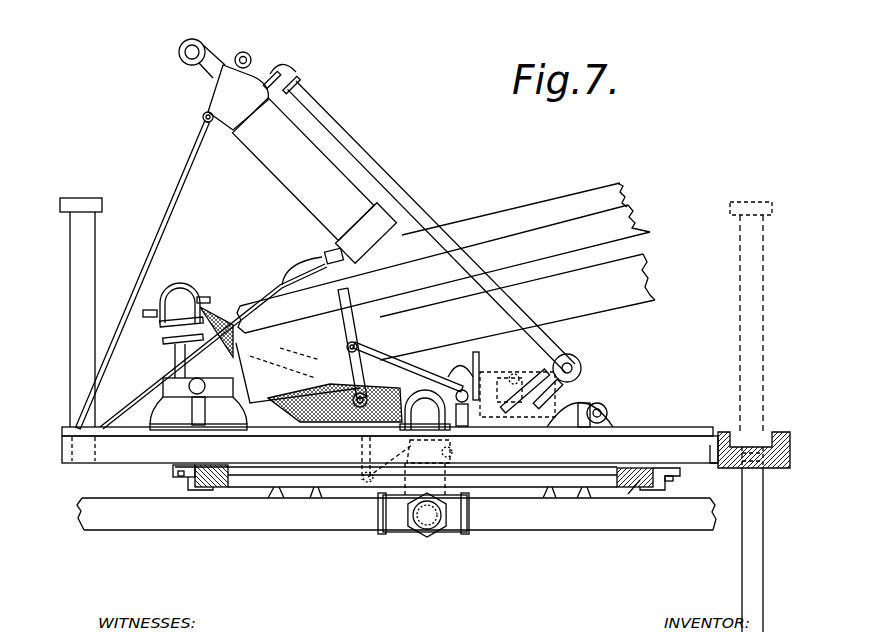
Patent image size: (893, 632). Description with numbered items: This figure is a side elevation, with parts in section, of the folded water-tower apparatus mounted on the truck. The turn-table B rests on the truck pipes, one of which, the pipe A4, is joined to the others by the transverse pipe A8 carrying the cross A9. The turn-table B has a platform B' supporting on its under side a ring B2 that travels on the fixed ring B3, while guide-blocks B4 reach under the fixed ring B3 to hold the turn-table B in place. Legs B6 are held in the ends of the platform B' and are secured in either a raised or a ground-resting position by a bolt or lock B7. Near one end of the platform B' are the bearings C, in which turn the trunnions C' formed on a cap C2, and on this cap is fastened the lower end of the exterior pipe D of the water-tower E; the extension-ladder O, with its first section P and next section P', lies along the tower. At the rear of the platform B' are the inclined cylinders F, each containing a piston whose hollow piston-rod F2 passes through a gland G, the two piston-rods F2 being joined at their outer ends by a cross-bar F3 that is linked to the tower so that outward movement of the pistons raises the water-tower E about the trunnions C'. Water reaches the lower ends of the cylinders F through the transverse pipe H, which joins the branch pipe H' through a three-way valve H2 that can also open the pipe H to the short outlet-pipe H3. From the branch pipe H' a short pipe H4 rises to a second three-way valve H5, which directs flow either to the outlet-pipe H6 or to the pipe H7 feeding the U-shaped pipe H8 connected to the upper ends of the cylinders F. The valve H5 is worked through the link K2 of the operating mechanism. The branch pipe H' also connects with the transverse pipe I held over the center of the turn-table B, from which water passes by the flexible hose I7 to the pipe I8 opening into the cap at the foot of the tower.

The turn-table B is at (390, 417).
The platform B' is at (428, 444).
The ring B2 is at (620, 466).
The fixed ring B3 is at (632, 490).
The guide-blocks B4 is at (686, 486).
The legs B6 is at (776, 528).
The bolt or lock B7 is at (778, 454).
The transverse pipe A8 is at (396, 508).
The pipe A4 is at (428, 523).
The cross A9 is at (400, 523).
The ladder-section P' is at (511, 205).
The extension-ladder O is at (630, 188).
The ladder-section P is at (444, 264).
The water-tower E is at (646, 266).
The exterior pipe D is at (574, 289).
The cylinders F is at (248, 263).
The hollow piston-rod F2 is at (232, 62).
The cross-bar F3 is at (192, 50).
The gland G is at (205, 93).
The U-shaped pipe H8 is at (392, 176).
The pipe H7 is at (562, 362).
The three-way valve H5 is at (566, 392).
The transversely-extending pipe H is at (592, 401).
The short pipe H4 is at (501, 374).
The outlet-pipe H6 is at (446, 393).
The three-way valve H2 is at (408, 360).
The short outlet-pipe H3 is at (397, 358).
The branch pipe H' is at (442, 387).
The link K2 is at (424, 459).
The transversely-extending pipe I is at (394, 359).
The flexible hose I7 is at (313, 392).
The pipe I8 is at (162, 346).
The bearings C is at (188, 404).
The trunnions C' is at (166, 375).
The cap C2 is at (298, 373).